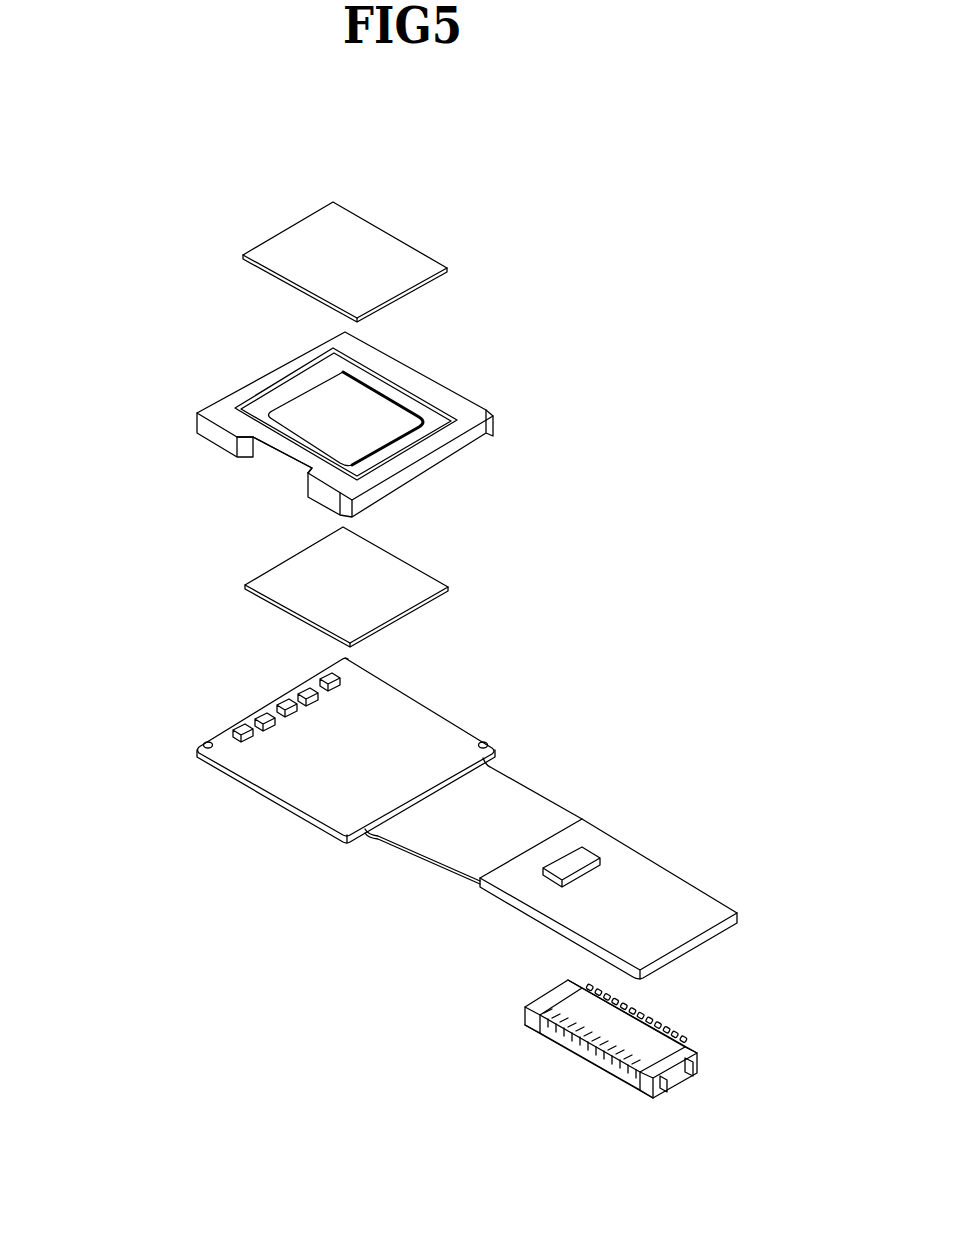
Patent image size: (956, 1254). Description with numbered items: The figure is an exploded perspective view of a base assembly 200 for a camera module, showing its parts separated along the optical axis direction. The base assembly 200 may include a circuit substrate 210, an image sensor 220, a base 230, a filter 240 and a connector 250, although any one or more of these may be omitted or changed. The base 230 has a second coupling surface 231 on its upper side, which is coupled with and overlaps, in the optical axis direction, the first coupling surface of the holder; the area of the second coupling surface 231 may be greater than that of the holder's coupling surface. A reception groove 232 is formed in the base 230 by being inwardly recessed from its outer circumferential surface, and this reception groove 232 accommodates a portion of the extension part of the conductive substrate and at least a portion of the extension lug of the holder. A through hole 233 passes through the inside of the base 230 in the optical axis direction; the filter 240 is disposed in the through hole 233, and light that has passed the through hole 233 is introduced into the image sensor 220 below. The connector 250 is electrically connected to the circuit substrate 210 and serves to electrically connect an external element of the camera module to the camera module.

The base assembly 200 is at (196, 153).
The circuit substrate 210 is at (187, 743).
The image sensor 220 is at (450, 577).
The base 230 is at (412, 426).
The second coupling surface 231 is at (407, 378).
The reception groove 232 is at (275, 473).
The through hole 233 is at (317, 410).
The filter 240 is at (440, 238).
The connector 250 is at (517, 1015).